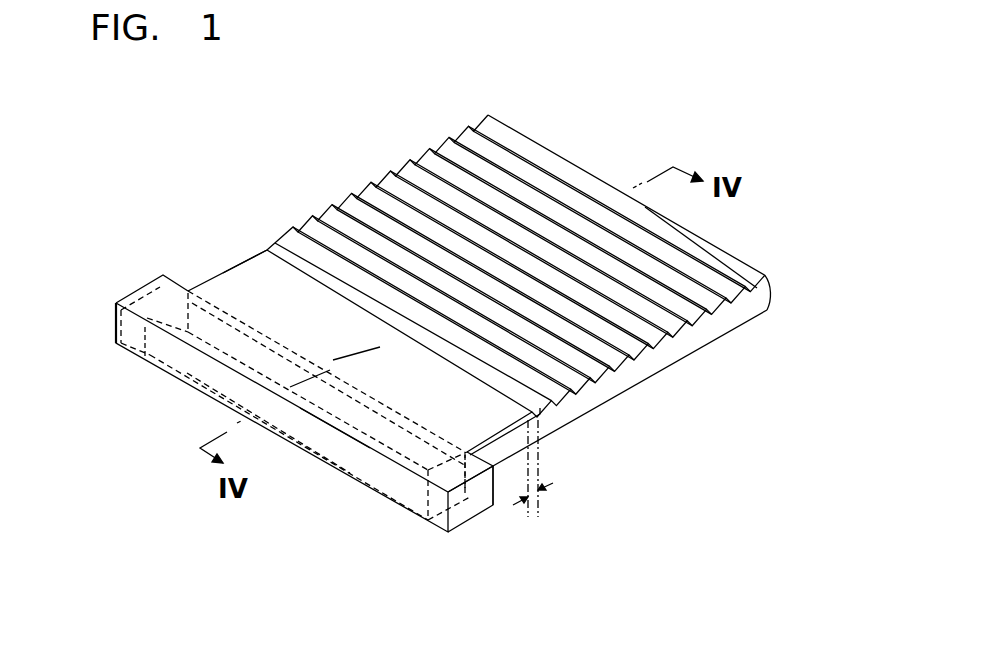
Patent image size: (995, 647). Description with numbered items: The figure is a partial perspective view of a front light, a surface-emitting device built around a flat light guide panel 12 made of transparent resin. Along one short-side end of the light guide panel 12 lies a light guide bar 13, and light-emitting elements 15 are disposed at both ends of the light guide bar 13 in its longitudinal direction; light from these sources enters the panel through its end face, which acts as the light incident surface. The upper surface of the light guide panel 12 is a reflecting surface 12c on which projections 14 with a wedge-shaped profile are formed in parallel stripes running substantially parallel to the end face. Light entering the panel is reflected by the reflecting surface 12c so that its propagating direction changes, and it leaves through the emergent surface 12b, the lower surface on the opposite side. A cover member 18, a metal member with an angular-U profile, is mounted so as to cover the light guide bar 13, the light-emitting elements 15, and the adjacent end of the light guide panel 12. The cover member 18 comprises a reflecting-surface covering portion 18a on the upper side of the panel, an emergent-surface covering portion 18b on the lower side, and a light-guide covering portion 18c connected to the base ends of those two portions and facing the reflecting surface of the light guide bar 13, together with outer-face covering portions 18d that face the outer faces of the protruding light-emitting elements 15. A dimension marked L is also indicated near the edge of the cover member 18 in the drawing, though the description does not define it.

The light guide panel 12 is at (479, 283).
The emergent surface 12b is at (692, 360).
The reflecting surface 12c is at (517, 215).
The light guide bar 13 is at (185, 375).
The projections 14 is at (378, 237).
The light-emitting elements 15 is at (118, 352).
The cover member 18 is at (307, 380).
The reflecting-surface covering portion 18a is at (300, 290).
The emergent-surface covering portion 18b is at (503, 467).
The light-guide covering portion 18c is at (370, 467).
The outer-face covering portions 18d is at (467, 507).
The gap dimension L is at (534, 483).